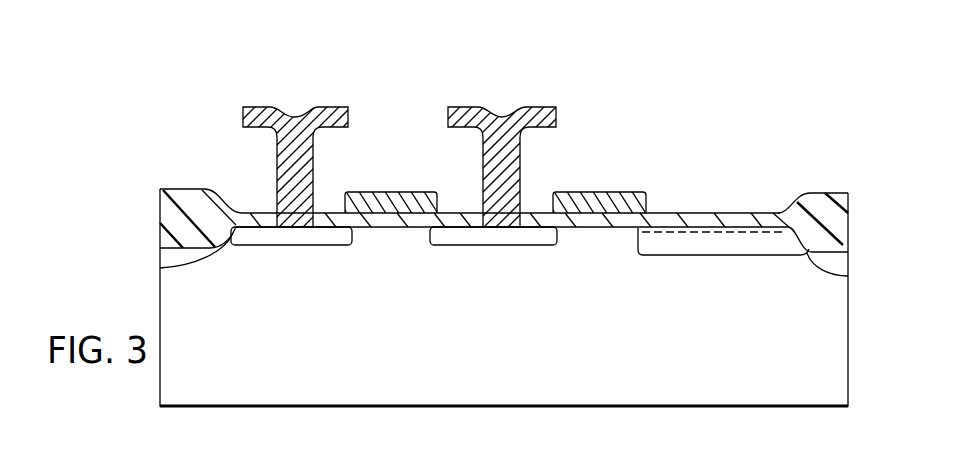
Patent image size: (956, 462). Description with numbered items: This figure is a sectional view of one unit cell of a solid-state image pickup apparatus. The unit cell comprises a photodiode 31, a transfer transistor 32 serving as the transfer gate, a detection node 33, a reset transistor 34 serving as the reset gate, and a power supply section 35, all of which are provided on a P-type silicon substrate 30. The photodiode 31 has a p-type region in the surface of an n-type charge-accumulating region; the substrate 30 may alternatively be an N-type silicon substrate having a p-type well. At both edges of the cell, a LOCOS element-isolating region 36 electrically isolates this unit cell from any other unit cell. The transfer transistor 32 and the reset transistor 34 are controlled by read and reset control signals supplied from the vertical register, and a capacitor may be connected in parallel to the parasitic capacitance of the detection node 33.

The P-type silicon substrate 30 is at (180, 299).
The photodiode 31 is at (715, 195).
The transfer transistor 32 is at (610, 170).
The detection node 33 is at (498, 95).
The reset transistor 34 is at (397, 170).
The power supply section 35 is at (292, 95).
The LOCOS element-isolating region 36 is at (183, 189).